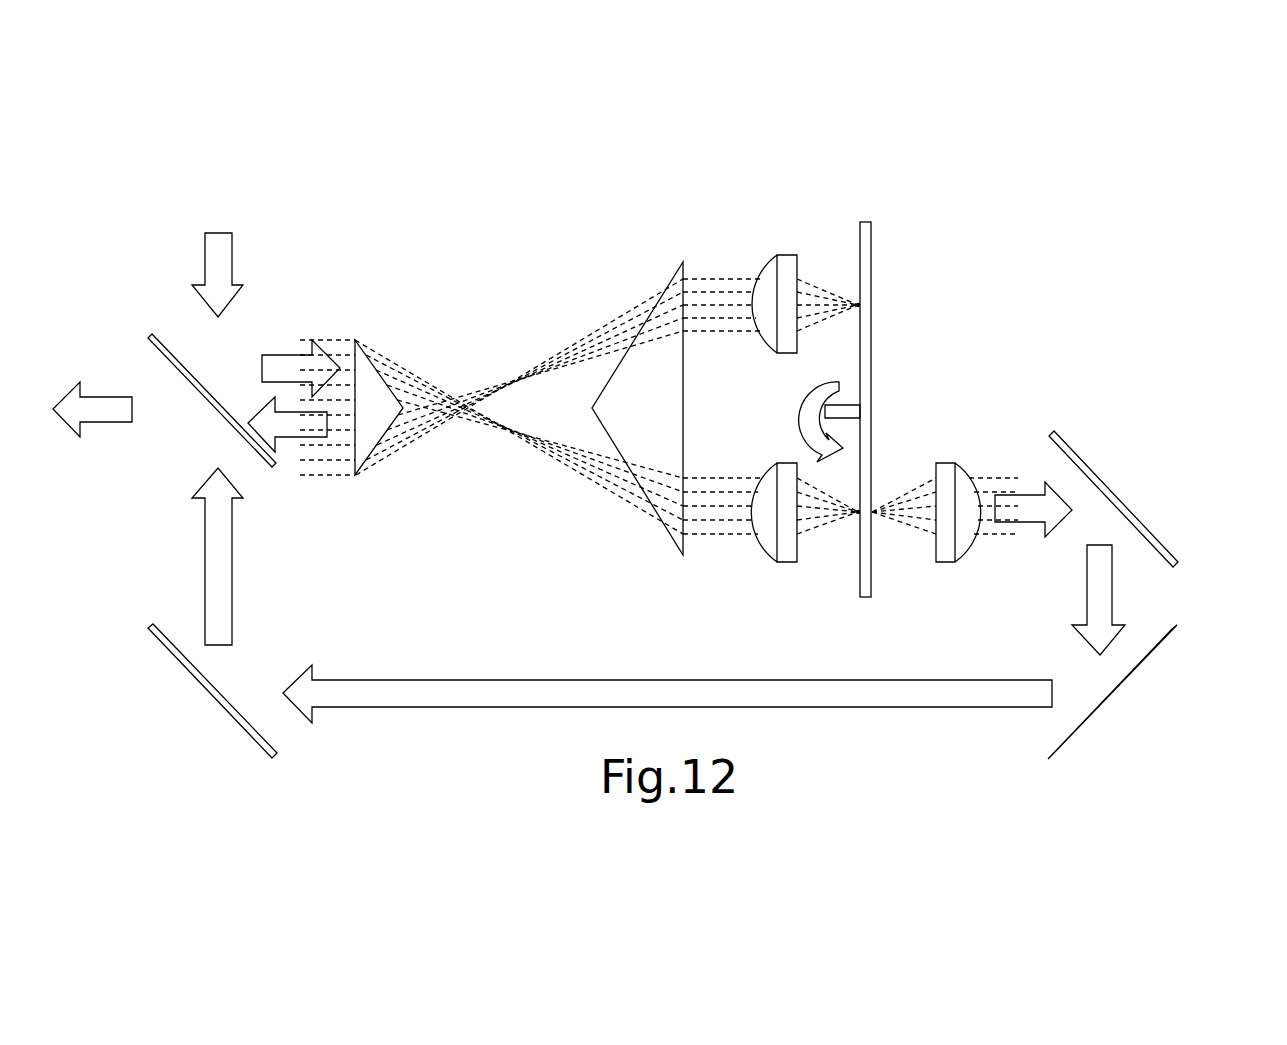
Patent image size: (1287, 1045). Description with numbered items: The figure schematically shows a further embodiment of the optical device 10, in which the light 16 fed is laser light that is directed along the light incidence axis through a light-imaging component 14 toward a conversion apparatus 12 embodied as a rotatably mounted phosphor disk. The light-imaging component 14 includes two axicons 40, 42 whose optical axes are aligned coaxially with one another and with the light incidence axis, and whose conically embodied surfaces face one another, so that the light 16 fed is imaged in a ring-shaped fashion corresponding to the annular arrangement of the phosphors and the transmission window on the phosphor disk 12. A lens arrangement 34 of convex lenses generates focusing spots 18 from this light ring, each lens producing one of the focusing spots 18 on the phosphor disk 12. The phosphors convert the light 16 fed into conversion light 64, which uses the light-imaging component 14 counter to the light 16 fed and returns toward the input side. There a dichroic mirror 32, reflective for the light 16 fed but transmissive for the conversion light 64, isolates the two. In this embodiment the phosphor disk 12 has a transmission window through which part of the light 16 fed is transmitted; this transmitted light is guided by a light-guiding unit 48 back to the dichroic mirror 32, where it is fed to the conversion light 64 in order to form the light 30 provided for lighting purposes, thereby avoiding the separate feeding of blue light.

The optical device 10 is at (578, 142).
The conversion apparatus 12 is at (866, 222).
The light-imaging component 14 is at (470, 297).
The light fed 16 is at (220, 263).
The focusing spots 18 is at (858, 303).
The light provided for illumination 30 is at (106, 422).
The dichroic mirror 32 is at (173, 350).
The lens arrangement 34 is at (871, 341).
The axicon 40 is at (360, 355).
The axicon 42 is at (648, 300).
The light-guiding unit 48 is at (1155, 661).
The conversion light 64 is at (826, 296).